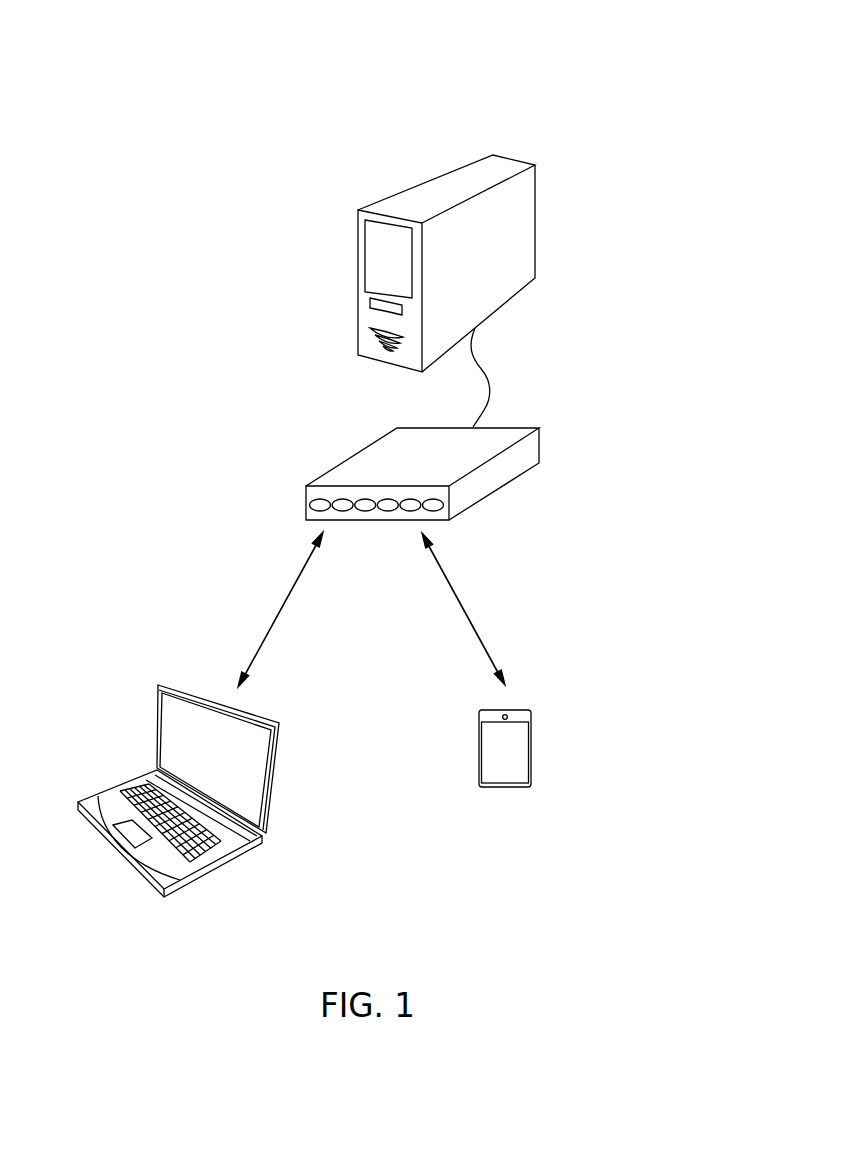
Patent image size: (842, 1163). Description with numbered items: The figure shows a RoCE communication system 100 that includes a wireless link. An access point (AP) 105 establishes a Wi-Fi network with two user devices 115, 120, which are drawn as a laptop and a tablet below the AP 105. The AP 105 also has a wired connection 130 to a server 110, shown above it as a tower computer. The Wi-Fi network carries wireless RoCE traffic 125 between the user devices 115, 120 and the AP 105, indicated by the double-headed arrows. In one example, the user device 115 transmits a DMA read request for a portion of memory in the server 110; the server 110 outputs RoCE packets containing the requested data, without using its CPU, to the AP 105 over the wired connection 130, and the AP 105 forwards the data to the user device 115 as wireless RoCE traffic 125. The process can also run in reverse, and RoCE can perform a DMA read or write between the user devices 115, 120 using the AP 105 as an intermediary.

The RoCE communication system 100 is at (596, 82).
The access point (AP) 105 is at (540, 449).
The server 110 is at (535, 233).
The user device 115 is at (220, 862).
The user device 120 is at (531, 750).
The wireless RoCE traffic 125 is at (277, 609).
The wired connection 130 is at (481, 363).